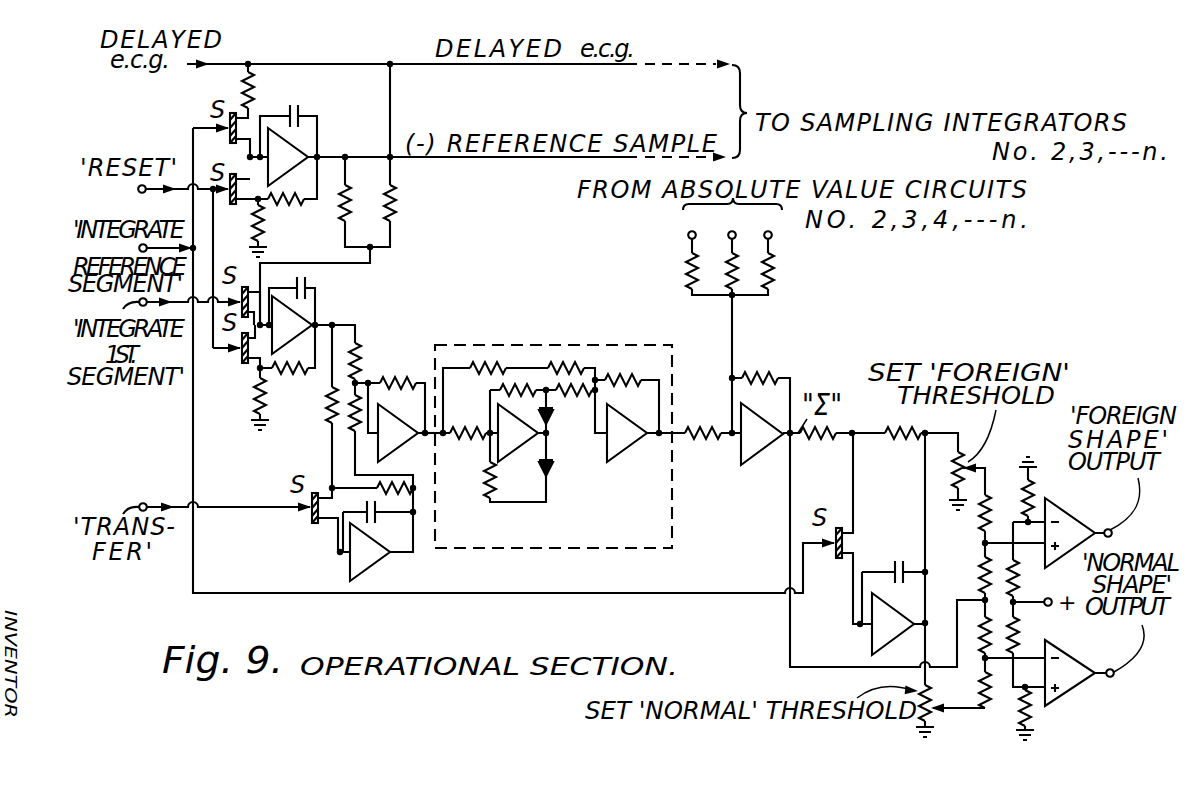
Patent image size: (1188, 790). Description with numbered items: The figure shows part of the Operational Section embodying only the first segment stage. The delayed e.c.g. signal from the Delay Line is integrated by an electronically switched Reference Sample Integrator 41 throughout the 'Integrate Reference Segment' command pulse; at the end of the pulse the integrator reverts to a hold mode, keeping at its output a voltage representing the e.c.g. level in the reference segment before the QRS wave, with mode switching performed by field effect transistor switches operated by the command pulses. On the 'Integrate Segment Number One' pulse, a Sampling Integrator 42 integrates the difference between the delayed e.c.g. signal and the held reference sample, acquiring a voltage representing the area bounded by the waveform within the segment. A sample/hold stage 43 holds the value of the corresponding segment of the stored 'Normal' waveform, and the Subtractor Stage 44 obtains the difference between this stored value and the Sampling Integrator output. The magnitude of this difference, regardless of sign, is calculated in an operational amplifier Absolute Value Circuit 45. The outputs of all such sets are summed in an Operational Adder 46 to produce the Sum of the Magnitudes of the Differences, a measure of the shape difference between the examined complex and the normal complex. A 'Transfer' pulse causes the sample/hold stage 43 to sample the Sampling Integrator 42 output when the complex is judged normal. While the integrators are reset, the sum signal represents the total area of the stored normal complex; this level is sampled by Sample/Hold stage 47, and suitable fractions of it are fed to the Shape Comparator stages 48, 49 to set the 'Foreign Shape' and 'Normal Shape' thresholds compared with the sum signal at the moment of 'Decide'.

The Reference Sample Integrator 41 is at (293, 146).
The Sampling Integrator 42 is at (297, 316).
The sample/hold stage 43 is at (376, 563).
The Subtractor Stage 44 is at (404, 400).
The Absolute Value Circuit 45 is at (538, 345).
The Operational Adder 46 is at (762, 449).
The Sample/Hold stage 47 is at (872, 645).
The Shape Comparator stage 48 is at (1074, 518).
The Shape Comparator stage 49 is at (1085, 650).